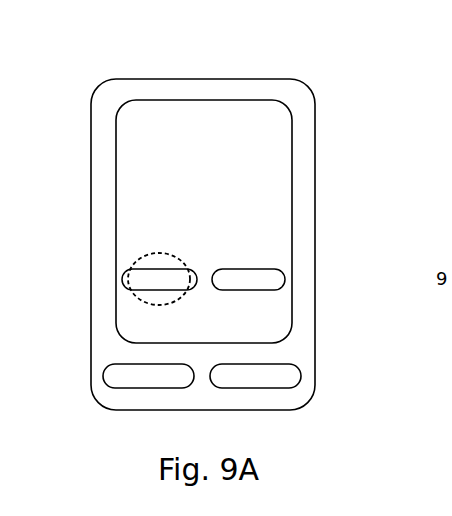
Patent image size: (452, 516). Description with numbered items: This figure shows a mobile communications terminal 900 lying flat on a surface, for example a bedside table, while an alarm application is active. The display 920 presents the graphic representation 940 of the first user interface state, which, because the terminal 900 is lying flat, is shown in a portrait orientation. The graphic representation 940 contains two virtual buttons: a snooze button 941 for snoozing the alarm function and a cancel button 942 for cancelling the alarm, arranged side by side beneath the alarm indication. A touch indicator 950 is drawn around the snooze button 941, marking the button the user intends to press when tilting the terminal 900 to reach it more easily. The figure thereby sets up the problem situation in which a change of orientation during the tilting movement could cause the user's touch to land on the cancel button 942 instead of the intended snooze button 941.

The mobile communications terminal 900 is at (104, 66).
The display screen 920 is at (293, 340).
The graphic representation 940 is at (265, 200).
The snooze button 941 is at (122, 279).
The cancel button 942 is at (285, 278).
The touch selection indicator 950 is at (154, 253).